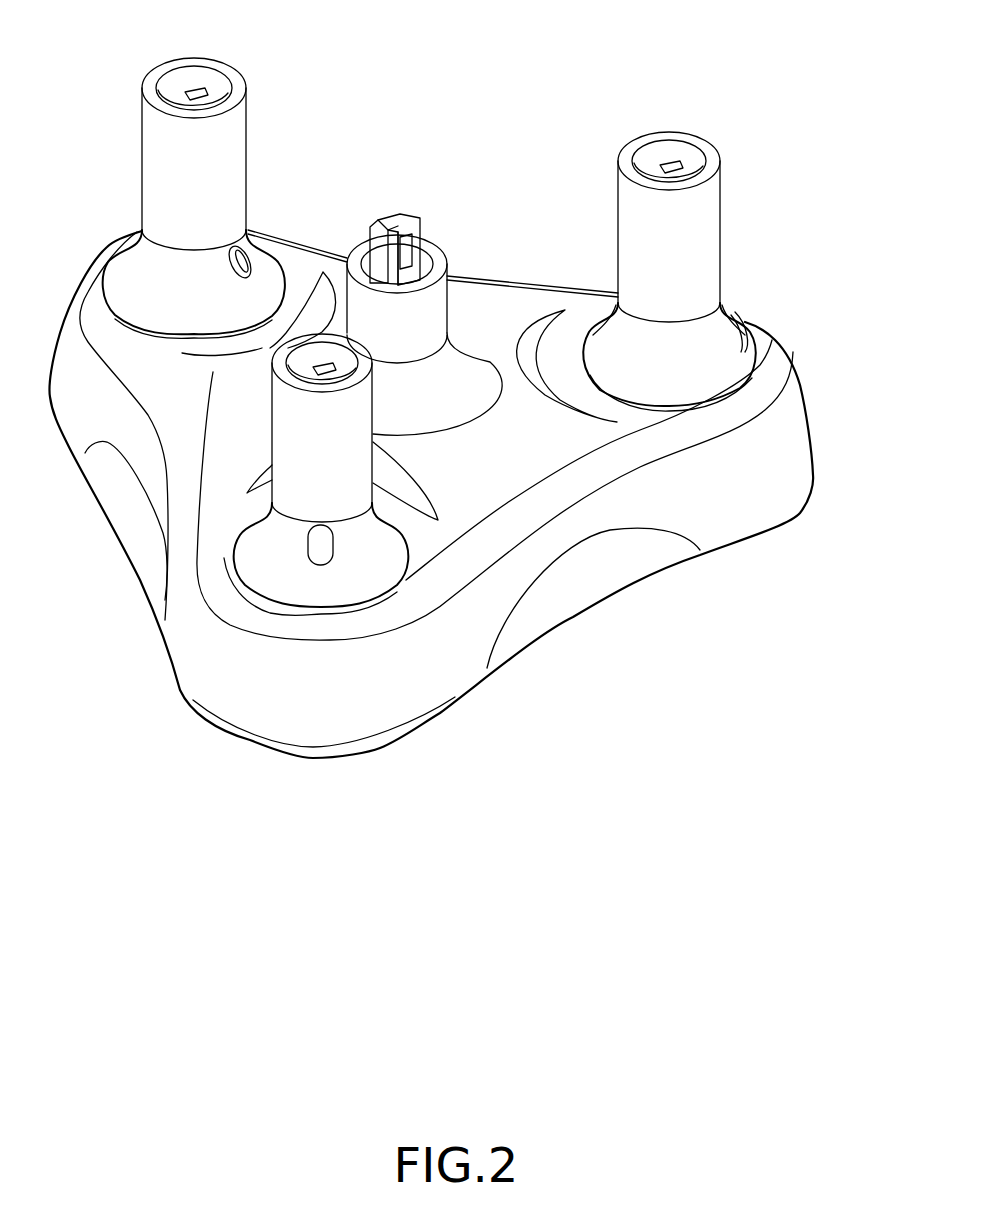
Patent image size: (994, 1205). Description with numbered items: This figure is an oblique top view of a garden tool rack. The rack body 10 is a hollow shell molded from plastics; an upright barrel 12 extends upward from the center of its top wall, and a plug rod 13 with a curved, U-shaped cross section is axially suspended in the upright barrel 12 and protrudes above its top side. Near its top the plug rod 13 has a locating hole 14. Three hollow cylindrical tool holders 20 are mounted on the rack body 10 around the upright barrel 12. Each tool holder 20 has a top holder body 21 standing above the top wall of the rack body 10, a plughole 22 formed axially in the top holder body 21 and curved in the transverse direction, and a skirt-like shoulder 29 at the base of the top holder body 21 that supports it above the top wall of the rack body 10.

The rack body 10 is at (798, 437).
The upright barrel 12 is at (433, 307).
The plug rod 13 is at (412, 227).
The locating hole 14 is at (408, 250).
The tool holder 20 is at (452, 337).
The top holder body 21 is at (152, 176).
The plughole 22 is at (207, 92).
The skirt-like shoulder 29 is at (260, 262).